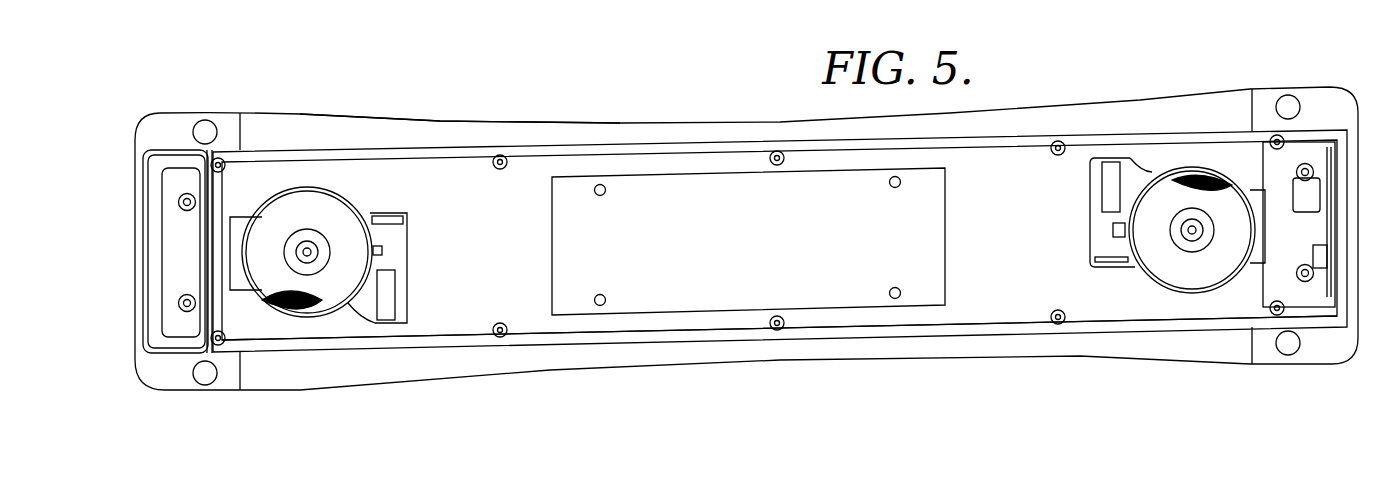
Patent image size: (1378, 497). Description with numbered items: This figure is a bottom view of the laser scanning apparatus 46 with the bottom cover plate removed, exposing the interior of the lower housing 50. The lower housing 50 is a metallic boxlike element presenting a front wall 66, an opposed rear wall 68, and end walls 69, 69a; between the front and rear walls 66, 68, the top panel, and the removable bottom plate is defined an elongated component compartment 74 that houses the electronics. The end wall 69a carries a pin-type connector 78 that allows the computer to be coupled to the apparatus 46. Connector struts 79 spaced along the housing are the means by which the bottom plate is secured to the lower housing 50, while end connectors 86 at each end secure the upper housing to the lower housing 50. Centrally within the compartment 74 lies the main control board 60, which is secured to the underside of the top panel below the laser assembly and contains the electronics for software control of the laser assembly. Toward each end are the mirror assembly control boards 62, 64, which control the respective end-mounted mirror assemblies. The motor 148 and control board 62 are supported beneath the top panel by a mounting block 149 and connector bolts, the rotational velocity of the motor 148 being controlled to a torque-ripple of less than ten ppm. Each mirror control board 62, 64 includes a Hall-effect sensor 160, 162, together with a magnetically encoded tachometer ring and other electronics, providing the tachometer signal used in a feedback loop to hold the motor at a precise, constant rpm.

The apparatus 46 is at (1052, 82).
The lower housing 50 is at (520, 121).
The main control board 60 is at (945, 275).
The mirror assembly control board 62 is at (360, 202).
The mirror assembly control board 64 is at (1141, 225).
The front wall 66 is at (656, 137).
The rear wall 68 is at (695, 350).
The end wall 69 is at (142, 237).
The end wall 69a is at (1345, 165).
The component compartment 74 is at (993, 232).
The pin-type connector 78 is at (1318, 210).
The connector struts 79 is at (770, 153).
The end connectors 86 is at (184, 198).
The motor 148 is at (336, 210).
The mounting block 149 is at (238, 217).
The Hall-effect sensor 160 is at (385, 252).
The Hall-effect sensor 162 is at (1113, 232).